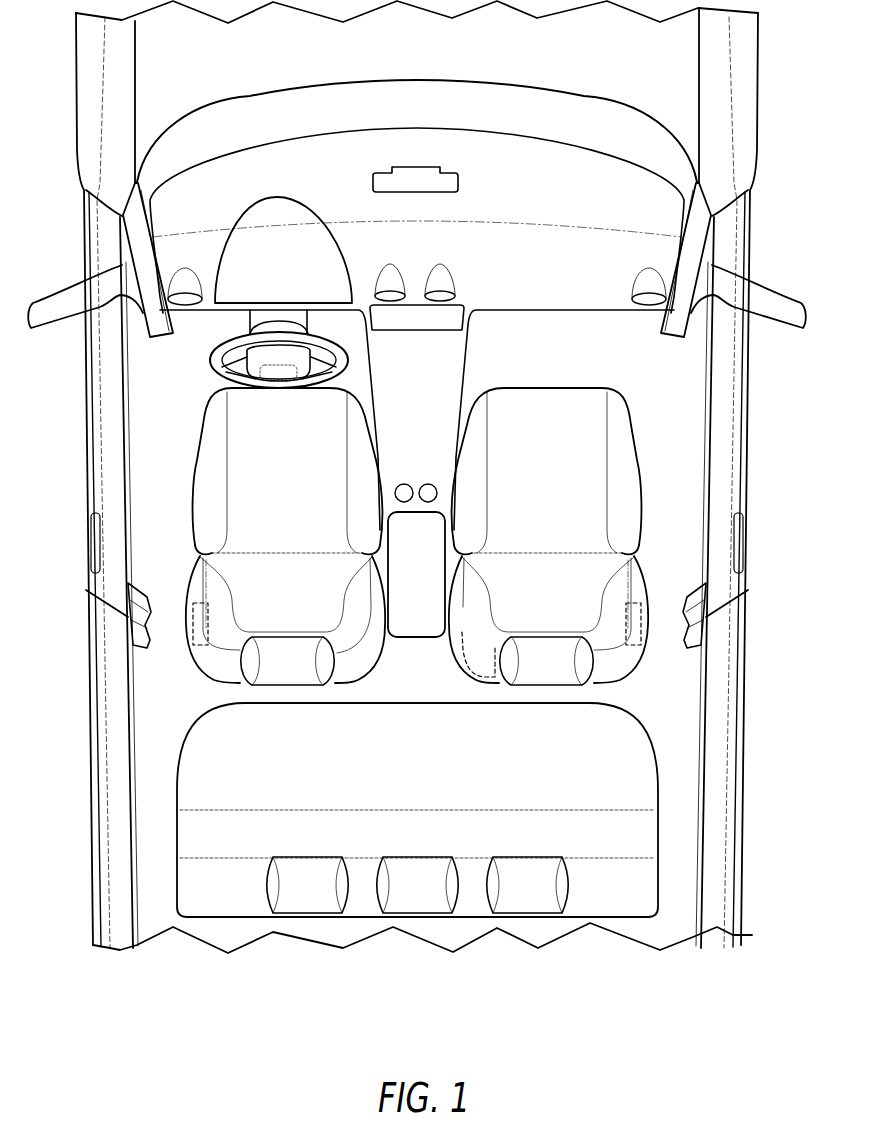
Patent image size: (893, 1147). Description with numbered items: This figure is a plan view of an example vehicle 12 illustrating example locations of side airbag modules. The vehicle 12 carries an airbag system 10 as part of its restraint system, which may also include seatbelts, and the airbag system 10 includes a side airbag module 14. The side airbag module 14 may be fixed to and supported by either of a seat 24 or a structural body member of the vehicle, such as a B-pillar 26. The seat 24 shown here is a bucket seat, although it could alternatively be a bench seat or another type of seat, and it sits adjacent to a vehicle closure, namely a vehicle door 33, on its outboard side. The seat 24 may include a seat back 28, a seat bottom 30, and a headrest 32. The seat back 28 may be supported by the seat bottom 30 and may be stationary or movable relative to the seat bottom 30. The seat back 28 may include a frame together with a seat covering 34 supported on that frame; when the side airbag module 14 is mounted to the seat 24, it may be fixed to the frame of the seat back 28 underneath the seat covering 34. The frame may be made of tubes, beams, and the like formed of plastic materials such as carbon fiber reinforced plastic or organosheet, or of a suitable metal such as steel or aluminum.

The airbag system 10 is at (155, 712).
The vehicle 12 is at (78, 188).
The side airbag module 14 is at (197, 650).
The seat 24 is at (413, 572).
The B-pillar 26 is at (147, 642).
The seat back 28 is at (190, 562).
The seat bottom 30 is at (197, 467).
The headrest 32 is at (250, 688).
The vehicle door 33 is at (80, 541).
The seat covering 34 is at (352, 668).